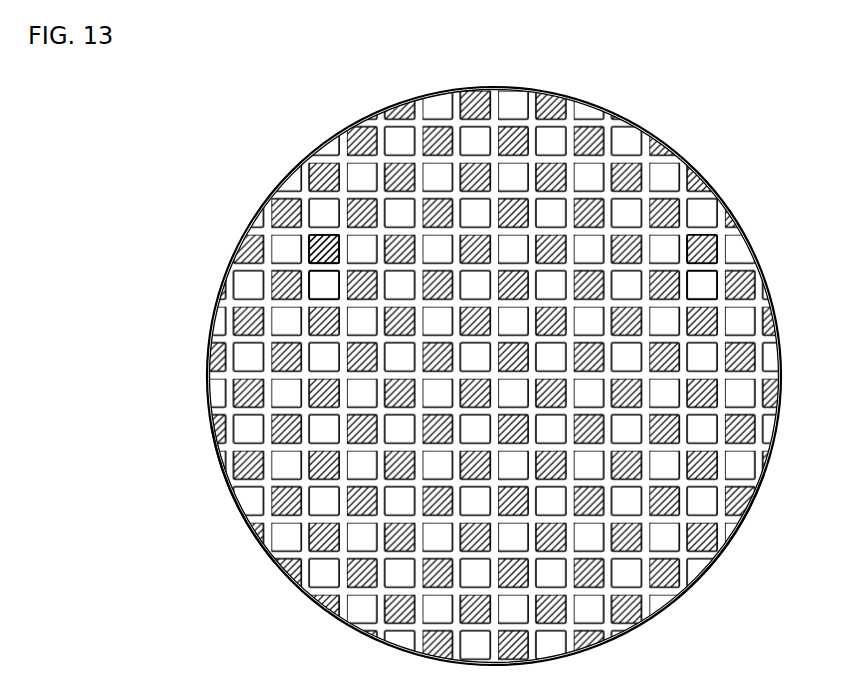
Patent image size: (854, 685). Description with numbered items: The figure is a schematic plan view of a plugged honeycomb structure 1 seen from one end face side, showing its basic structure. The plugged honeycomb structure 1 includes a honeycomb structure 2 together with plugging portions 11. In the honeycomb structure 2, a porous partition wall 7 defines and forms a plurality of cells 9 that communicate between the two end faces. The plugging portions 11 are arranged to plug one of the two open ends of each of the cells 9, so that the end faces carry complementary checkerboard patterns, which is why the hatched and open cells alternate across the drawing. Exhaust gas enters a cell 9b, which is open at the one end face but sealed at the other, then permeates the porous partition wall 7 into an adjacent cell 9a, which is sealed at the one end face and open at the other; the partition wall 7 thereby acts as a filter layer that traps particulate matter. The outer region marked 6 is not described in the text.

The plugged honeycomb structure 1 is at (755, 254).
The honeycomb structure 2 is at (733, 535).
The outer wall portion 6 is at (237, 498).
The partition wall 7 is at (702, 268).
The cells 9 is at (143, 226).
The cell 9a is at (318, 252).
The cell 9b is at (322, 288).
The plugging portions 11 is at (325, 247).